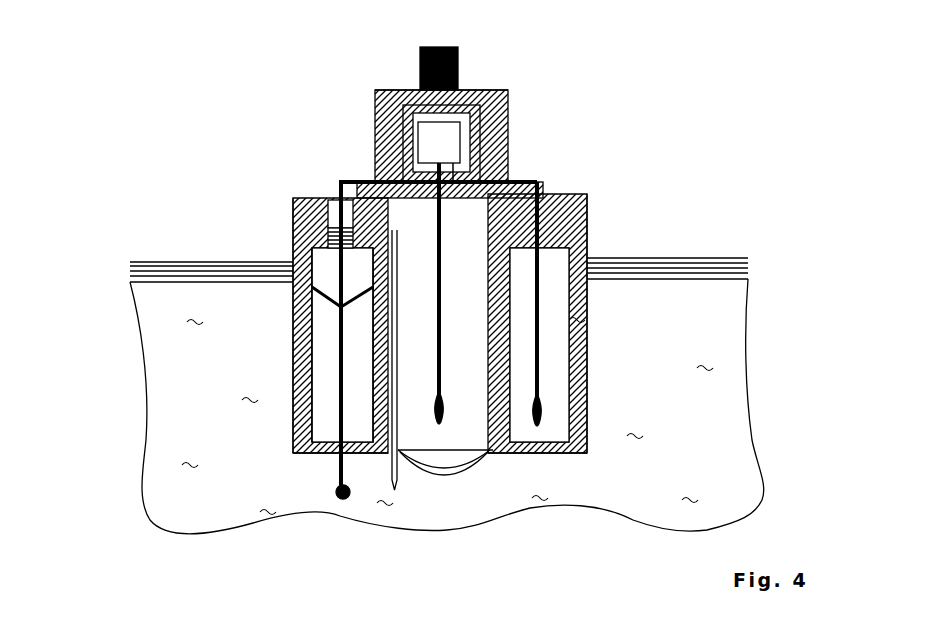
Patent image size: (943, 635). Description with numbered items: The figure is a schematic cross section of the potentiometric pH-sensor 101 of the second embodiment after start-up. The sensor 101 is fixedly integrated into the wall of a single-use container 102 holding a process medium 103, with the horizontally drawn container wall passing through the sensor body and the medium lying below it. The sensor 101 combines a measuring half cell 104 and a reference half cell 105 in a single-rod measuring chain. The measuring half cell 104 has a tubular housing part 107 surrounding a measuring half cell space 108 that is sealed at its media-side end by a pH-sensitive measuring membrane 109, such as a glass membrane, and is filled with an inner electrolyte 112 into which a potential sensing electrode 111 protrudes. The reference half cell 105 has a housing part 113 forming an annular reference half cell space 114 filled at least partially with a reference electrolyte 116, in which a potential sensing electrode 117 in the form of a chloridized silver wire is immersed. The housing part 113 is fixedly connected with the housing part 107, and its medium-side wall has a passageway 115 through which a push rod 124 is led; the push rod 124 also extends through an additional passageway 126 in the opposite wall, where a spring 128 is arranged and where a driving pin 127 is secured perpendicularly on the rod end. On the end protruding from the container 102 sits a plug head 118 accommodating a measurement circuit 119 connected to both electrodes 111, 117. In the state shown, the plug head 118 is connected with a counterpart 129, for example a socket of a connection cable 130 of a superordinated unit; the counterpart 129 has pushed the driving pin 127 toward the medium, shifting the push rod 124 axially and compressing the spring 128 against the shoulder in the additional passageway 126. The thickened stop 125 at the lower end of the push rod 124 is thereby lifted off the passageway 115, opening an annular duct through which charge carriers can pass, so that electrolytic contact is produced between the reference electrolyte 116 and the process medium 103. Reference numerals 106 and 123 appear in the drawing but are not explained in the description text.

The potentiometric pH-sensor 101 is at (680, 152).
The single-use container 102 is at (657, 257).
The process medium 103 is at (730, 313).
The measuring half cell 104 is at (473, 213).
The reference half cell 105 is at (548, 277).
The housing bottom 106 is at (582, 452).
The tubular housing part 107 is at (507, 182).
The measuring half cell space 108 is at (323, 277).
The measuring membrane 109 is at (450, 470).
The potential sensing electrode 111 is at (397, 452).
The inner electrolyte 112 is at (442, 457).
The housing part 113 is at (588, 412).
The reference half cell space 114 is at (528, 433).
The passageway 115 is at (333, 452).
The reference electrolyte 116 is at (330, 357).
The potential sensing electrode 117 is at (548, 363).
The plug head 118 is at (483, 112).
The measurement circuit 119 is at (427, 137).
The housing body 123 is at (292, 238).
The push rod 124 is at (333, 400).
The stop 125 is at (342, 500).
The additional passageway 126 is at (332, 207).
The driving pin 127 is at (362, 180).
The spring 128 is at (293, 220).
The counterpart 129 is at (467, 88).
The connection cable 130 is at (420, 76).